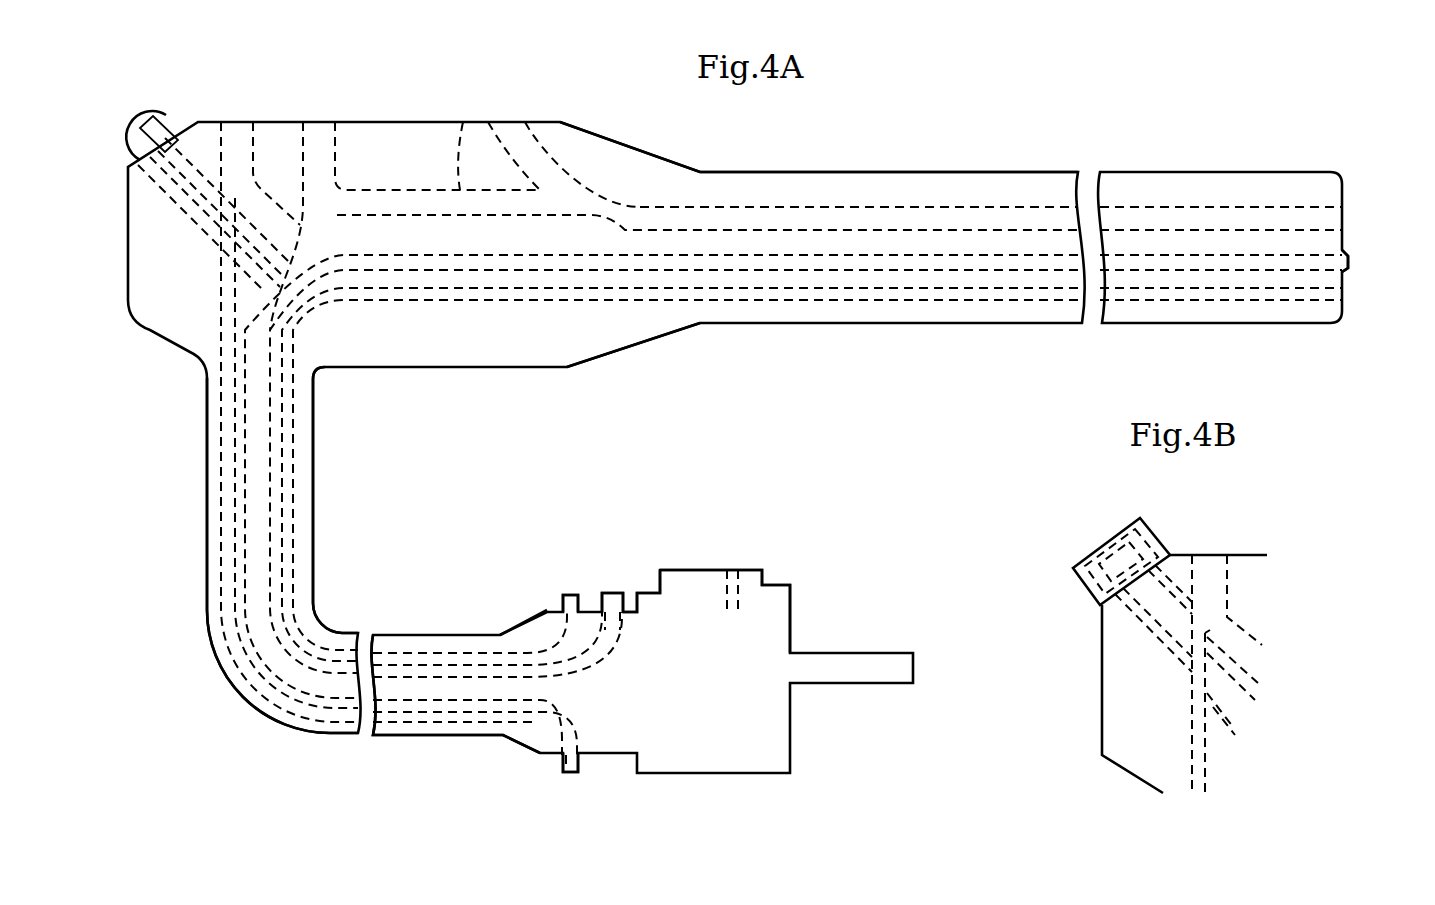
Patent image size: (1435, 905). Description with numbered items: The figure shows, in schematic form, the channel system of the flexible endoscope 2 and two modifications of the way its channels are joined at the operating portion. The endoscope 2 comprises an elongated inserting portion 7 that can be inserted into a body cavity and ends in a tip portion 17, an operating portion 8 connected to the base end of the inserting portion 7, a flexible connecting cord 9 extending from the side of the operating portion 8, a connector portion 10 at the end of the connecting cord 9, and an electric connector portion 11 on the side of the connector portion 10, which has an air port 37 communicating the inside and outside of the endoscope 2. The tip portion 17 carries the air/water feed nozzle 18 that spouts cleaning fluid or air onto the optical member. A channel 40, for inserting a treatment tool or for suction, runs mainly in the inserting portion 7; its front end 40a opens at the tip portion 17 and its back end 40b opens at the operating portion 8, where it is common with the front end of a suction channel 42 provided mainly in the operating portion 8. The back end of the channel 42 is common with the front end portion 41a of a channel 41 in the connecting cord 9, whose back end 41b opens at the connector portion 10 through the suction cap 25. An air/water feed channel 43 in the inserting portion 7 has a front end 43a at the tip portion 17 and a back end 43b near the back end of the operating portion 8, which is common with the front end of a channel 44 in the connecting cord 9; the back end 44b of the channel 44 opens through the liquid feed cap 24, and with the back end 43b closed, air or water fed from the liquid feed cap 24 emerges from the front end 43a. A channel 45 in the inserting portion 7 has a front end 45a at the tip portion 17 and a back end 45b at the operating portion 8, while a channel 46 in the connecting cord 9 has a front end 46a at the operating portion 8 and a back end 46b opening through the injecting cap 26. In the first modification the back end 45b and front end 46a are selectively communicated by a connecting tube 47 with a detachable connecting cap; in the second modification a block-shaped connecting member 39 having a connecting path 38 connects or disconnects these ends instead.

In FIG. 4A, the endoscope 2 is at (1192, 140).
In FIG. 4A, the inserting portion 7 is at (1054, 170).
In FIG. 4A, the operating portion 8 is at (438, 375).
In FIG. 4B, the operating portion 8 is at (1090, 731).
In FIG. 4A, the connecting cord 9 is at (198, 583).
In FIG. 4A, the connector portion 10 is at (795, 742).
In FIG. 4A, the electric connector portion 11 is at (763, 583).
In FIG. 4A, the tip portion 17 is at (1298, 172).
In FIG. 4A, the air/water feed nozzle 18 is at (1350, 260).
In FIG. 4A, the liquid feed cap 24 is at (562, 770).
In FIG. 4A, the suction cap 25 is at (625, 592).
In FIG. 4A, the injecting cap 26 is at (560, 607).
In FIG. 4A, the air port 37 is at (735, 570).
In FIG. 4B, the connecting path 38 is at (1092, 560).
In FIG. 4B, the connecting member 39 is at (1127, 527).
In FIG. 4A, the channel 40 is at (928, 207).
In FIG. 4A, the front end of channel 40 40a is at (1342, 215).
In FIG. 4A, the back end of channel 40 40b is at (503, 122).
In FIG. 4A, the channel 41 is at (247, 433).
In FIG. 4A, the front end portion of channel 41 41a is at (323, 122).
In FIG. 4A, the back end of channel 41 41b is at (610, 595).
In FIG. 4A, the channel 42 is at (465, 122).
In FIG. 4A, the channel 43 is at (957, 270).
In FIG. 4B, the channel 43 is at (1258, 643).
In FIG. 4A, the front end of channel 43 43a is at (1342, 245).
In FIG. 4A, the back end of channel 43 43b is at (253, 122).
In FIG. 4B, the back end of channel 43 43b is at (1220, 555).
In FIG. 4A, the channel 44 is at (221, 382).
In FIG. 4B, the channel 44 is at (1190, 760).
In FIG. 4A, the back end of channel 44 44b is at (577, 772).
In FIG. 4A, the channel 45 is at (533, 300).
In FIG. 4B, the channel 45 is at (1258, 670).
In FIG. 4A, the front end of channel 45 45a is at (1342, 290).
In FIG. 4A, the back end of channel 45 45b is at (200, 120).
In FIG. 4B, the back end of channel 45 45b is at (1162, 540).
In FIG. 4A, the channel 46 is at (293, 463).
In FIG. 4B, the channel 46 is at (1192, 660).
In FIG. 4A, the front end of channel 46 46a is at (160, 100).
In FIG. 4B, the front end of channel 46 46a is at (1095, 600).
In FIG. 4A, the back end of channel 46 46b is at (566, 595).
In FIG. 4A, the connecting tube 47 is at (137, 112).